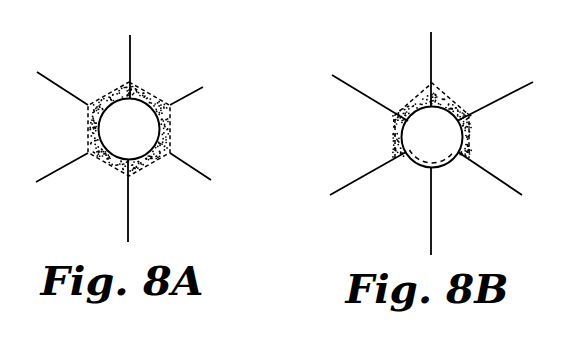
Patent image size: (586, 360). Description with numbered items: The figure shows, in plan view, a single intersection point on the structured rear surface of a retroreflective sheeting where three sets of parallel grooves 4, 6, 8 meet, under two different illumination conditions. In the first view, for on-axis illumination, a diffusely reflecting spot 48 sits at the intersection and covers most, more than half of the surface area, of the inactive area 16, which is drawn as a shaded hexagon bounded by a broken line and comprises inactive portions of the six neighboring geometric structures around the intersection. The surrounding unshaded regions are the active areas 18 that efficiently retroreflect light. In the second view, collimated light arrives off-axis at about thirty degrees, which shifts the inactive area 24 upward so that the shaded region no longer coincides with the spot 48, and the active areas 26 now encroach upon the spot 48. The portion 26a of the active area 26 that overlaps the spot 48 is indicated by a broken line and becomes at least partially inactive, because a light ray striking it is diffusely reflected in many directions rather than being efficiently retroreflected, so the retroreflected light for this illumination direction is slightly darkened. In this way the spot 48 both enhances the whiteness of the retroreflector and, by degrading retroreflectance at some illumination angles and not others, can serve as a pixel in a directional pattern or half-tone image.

In FIG. 8A, the parallel groove 4 is at (130, 45).
In FIG. 8B, the parallel groove 4 is at (428, 228).
In FIG. 8B, the parallel groove 6 is at (348, 84).
In FIG. 8A, the parallel groove 8 is at (191, 93).
In FIG. 8B, the parallel groove 8 is at (525, 88).
In FIG. 8A, the inactive area 16 is at (168, 123).
In FIG. 8A, the active area 18 is at (80, 76).
In FIG. 8B, the inactive area 24 is at (402, 100).
In FIG. 8B, the active area 26 is at (464, 75).
In FIG. 8B, the overlap portion 26a is at (447, 167).
In FIG. 8A, the diffusely reflecting spot 48 is at (114, 141).
In FIG. 8B, the diffusely reflecting spot 48 is at (417, 144).